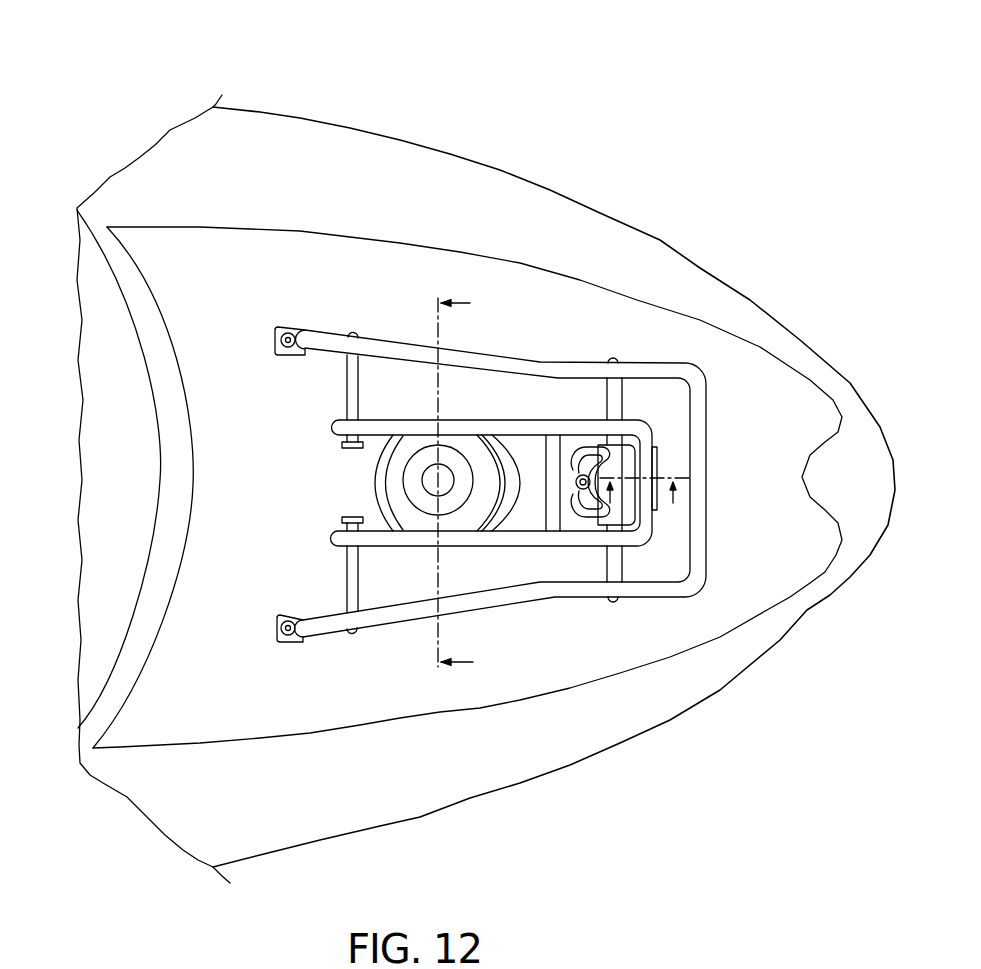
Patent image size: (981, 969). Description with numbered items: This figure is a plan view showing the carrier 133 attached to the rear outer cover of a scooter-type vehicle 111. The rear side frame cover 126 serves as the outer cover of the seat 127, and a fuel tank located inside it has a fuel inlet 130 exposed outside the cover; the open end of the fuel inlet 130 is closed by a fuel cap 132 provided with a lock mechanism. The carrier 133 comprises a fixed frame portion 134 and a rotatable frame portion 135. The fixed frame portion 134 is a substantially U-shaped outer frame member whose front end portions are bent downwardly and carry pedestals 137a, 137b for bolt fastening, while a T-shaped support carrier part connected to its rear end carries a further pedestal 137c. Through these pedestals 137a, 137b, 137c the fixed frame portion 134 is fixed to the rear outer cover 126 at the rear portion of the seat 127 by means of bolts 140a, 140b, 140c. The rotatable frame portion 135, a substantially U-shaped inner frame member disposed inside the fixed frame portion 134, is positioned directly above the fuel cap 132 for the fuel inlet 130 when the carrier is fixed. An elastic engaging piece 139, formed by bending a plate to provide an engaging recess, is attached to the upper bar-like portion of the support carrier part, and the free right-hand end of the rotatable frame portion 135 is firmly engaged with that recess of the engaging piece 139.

The scooter-type vehicle 111 is at (415, 118).
The rear side frame cover 126 is at (531, 217).
The seat 127 is at (105, 293).
The fuel inlet 130 is at (393, 488).
The fuel cap 132 is at (393, 468).
The carrier 133 is at (686, 360).
The fixed frame portion 134 is at (538, 366).
The rotatable frame portion 135 is at (400, 540).
The pedestal 137a is at (277, 633).
The pedestal 137b is at (277, 340).
The pedestal 137c is at (573, 470).
The engaging piece 139 is at (657, 472).
The bolt 140a is at (287, 642).
The bolt 140b is at (287, 335).
The bolt 140c is at (575, 500).